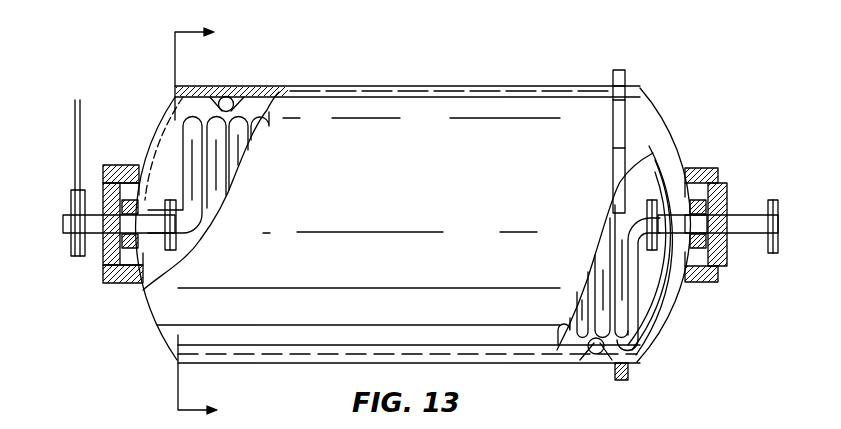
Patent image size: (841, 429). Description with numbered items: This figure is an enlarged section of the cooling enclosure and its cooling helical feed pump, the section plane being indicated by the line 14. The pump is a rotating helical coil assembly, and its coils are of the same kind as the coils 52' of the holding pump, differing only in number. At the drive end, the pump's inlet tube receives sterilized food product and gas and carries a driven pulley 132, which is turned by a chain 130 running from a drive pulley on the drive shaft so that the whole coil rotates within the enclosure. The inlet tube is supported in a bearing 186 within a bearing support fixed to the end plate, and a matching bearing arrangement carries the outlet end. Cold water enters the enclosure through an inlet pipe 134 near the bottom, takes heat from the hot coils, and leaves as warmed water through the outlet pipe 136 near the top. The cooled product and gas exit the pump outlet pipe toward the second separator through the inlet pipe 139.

The section line 14 is at (210, 222).
The outlet pipe 136 is at (228, 96).
The bearing 186 is at (151, 205).
The chain 130 is at (74, 130).
The driven pulley 132 is at (70, 204).
The coils 52' is at (247, 160).
The inlet pipe 139 is at (757, 213).
The inlet pipe 134 is at (595, 355).